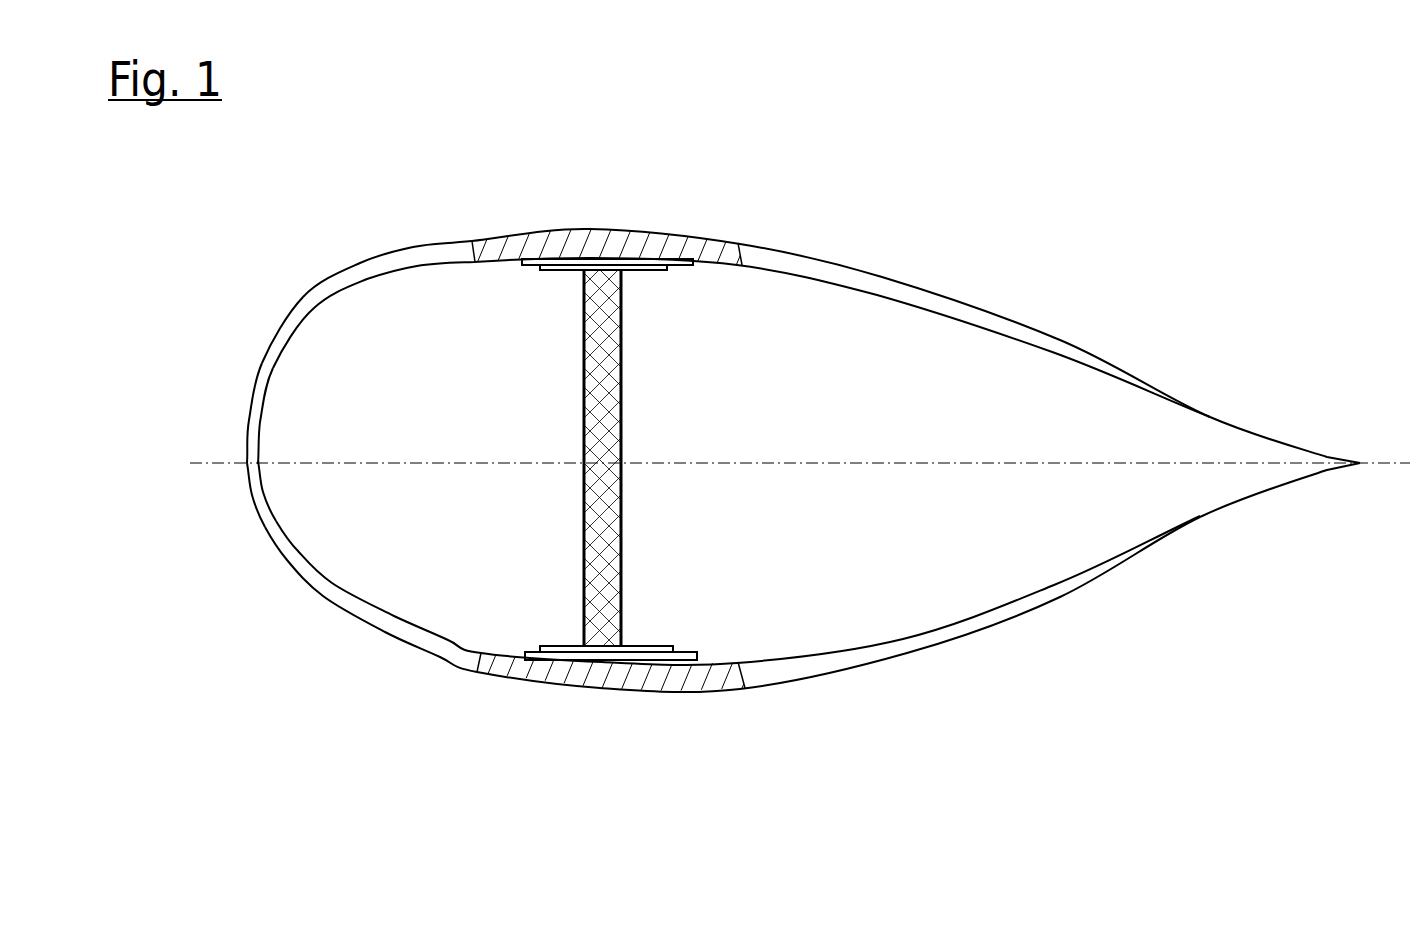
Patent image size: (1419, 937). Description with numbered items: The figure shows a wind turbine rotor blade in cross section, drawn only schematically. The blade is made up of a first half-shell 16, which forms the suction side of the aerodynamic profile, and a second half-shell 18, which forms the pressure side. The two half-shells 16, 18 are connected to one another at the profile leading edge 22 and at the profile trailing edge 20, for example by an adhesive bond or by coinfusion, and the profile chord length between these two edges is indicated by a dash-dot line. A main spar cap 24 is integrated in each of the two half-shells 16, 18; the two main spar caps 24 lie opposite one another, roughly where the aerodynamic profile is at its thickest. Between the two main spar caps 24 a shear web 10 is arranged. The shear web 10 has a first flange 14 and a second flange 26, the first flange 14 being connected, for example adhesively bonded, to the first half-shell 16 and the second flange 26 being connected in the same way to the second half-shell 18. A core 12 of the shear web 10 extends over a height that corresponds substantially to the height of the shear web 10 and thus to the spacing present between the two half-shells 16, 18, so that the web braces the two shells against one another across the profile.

The shear web 10 is at (763, 459).
The core 12 is at (627, 412).
The first flange 14 is at (548, 272).
The first half-shell 16 is at (885, 283).
The second half-shell 18 is at (892, 650).
The profile trailing edge 20 is at (1358, 465).
The profile leading edge 22 is at (247, 463).
The main spar cap 24 is at (640, 230).
The second flange 26 is at (650, 652).